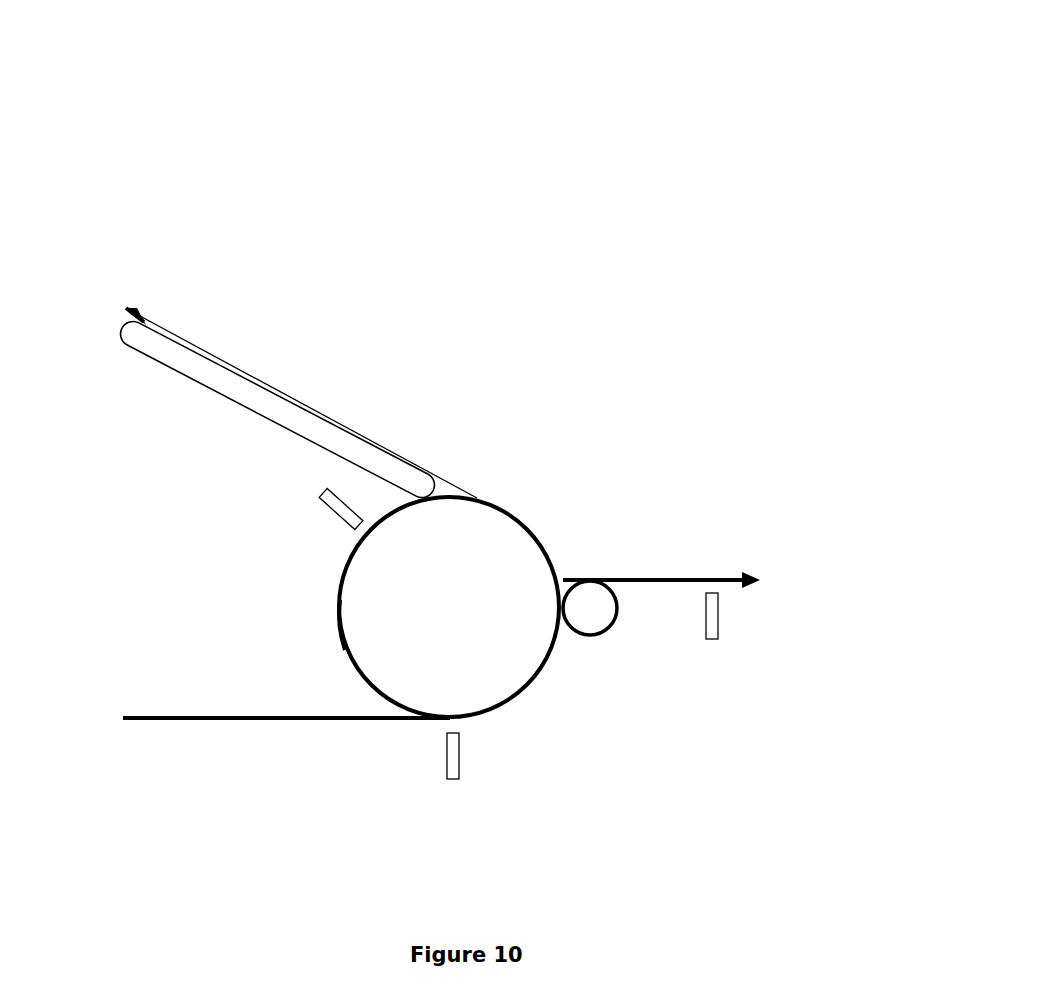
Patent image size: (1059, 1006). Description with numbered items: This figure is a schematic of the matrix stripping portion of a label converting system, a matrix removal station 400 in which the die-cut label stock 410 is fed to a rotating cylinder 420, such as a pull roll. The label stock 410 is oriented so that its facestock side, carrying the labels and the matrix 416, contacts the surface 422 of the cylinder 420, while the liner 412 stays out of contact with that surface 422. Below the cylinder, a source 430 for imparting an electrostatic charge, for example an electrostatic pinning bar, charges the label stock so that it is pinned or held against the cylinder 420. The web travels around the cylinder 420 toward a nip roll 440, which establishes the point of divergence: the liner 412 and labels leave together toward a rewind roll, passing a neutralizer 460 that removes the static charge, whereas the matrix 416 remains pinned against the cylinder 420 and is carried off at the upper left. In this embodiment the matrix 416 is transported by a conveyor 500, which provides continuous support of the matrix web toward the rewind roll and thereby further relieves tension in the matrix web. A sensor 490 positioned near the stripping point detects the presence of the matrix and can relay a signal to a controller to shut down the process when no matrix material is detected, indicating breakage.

The matrix removal station 400 is at (433, 273).
The die-cut label stock 410 is at (217, 785).
The liner 412 is at (285, 721).
The matrix 416 is at (455, 487).
The rotating cylinder 420 is at (368, 584).
The surface of cylinder 422 is at (347, 658).
The source for imparting an electrostatic charge 430 is at (453, 780).
The nip roll 440 is at (620, 604).
The neutralizer 460 is at (708, 640).
The sensor 490 is at (323, 488).
The conveyor 500 is at (218, 394).